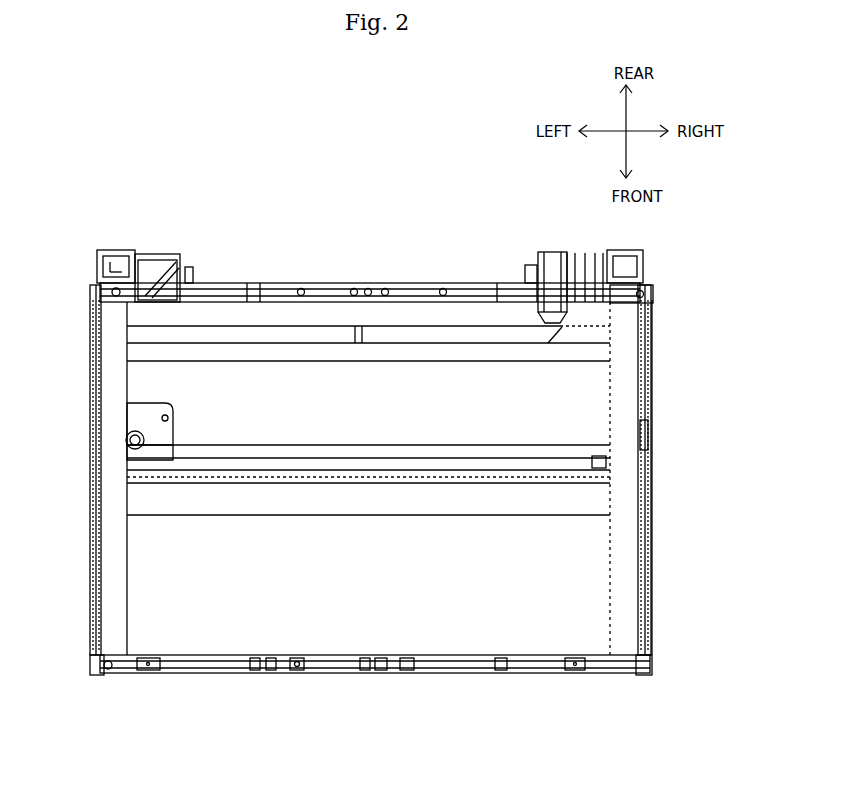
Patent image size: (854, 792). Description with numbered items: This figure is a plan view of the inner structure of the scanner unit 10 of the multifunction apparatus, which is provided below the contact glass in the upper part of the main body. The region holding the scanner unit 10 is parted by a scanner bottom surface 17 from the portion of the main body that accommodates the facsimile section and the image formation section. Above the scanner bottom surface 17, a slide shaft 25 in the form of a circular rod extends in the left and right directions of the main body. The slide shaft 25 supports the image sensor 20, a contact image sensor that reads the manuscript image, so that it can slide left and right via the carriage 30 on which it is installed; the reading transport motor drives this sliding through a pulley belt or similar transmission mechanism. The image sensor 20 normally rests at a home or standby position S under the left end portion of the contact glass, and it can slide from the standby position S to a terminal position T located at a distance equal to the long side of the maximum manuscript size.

The scanner unit 10 is at (232, 636).
The scanner bottom surface 17 is at (378, 590).
The image sensor 20 is at (108, 573).
The slide shaft 25 is at (486, 480).
The carriage 30 is at (100, 405).
The standby position S is at (110, 672).
The terminal position T is at (652, 372).